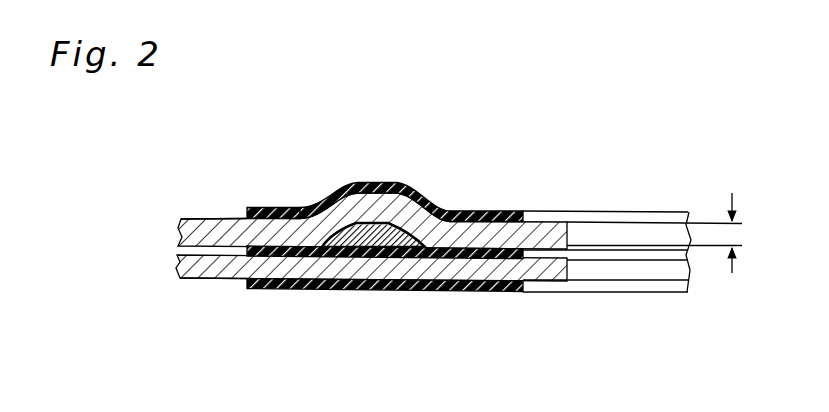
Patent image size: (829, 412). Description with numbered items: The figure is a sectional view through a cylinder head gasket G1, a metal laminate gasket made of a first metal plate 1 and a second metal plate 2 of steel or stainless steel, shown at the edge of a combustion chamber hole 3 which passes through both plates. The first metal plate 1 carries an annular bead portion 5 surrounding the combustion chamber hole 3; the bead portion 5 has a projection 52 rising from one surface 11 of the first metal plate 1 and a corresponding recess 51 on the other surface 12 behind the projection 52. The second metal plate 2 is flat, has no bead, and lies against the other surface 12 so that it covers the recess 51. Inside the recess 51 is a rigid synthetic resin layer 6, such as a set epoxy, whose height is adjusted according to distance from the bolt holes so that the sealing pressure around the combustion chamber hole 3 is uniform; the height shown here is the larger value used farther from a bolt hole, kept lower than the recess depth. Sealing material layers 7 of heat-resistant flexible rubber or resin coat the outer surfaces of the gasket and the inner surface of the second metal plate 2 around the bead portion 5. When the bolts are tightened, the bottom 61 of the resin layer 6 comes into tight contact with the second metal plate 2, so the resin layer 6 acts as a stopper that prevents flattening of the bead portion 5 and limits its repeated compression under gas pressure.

The first metal plate 1 is at (228, 217).
The one surface of the first metal plate 11 is at (203, 217).
The second metal plate 2 is at (207, 266).
The other surface of the first metal plate 12 is at (188, 270).
The combustion chamber hole 3 is at (648, 270).
The bead portion 5 is at (348, 163).
The recess 51 is at (323, 208).
The projection 52 is at (393, 210).
The rigid synthetic resin layer 6 is at (428, 213).
The bottom of the resin layer 61 is at (371, 232).
The sealing material layer 7 is at (507, 287).
The cylinder head gasket G1 is at (559, 207).